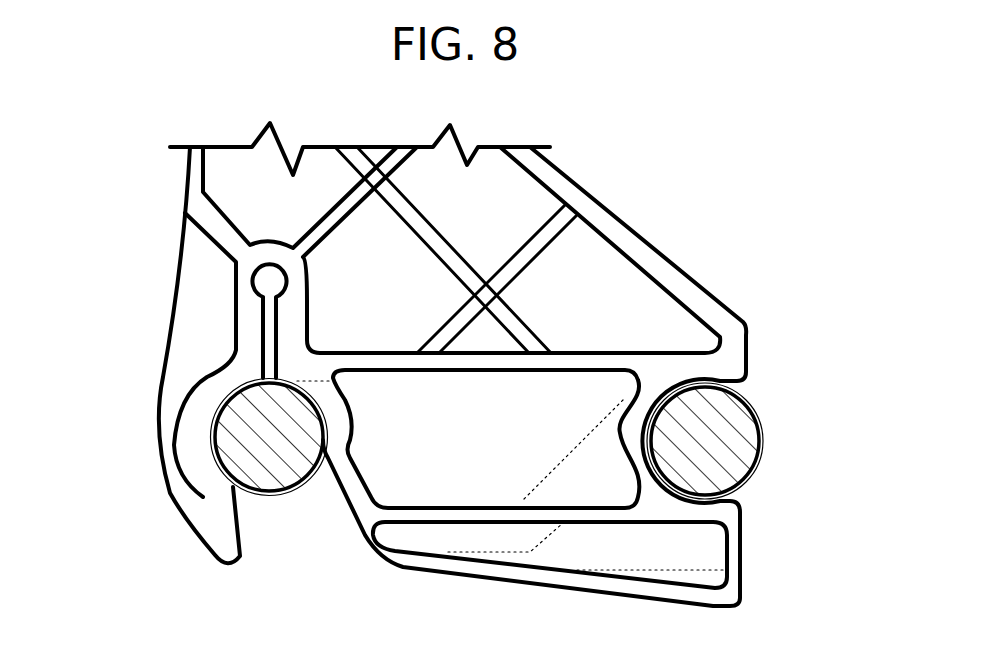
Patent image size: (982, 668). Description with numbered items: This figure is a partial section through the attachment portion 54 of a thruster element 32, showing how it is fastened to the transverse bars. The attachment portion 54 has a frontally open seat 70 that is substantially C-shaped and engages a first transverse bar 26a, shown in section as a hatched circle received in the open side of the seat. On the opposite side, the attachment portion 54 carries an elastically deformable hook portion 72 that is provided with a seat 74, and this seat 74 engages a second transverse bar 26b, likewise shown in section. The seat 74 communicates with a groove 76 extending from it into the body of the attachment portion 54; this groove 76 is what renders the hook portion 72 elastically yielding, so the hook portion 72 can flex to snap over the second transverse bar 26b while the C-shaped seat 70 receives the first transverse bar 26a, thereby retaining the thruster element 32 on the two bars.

The thruster element 32 is at (640, 213).
The attachment portion 54 is at (640, 332).
The groove 76 is at (266, 352).
The hook portion 72 is at (193, 438).
The second transverse bar 26b is at (292, 470).
The seat 74 is at (268, 495).
The first transverse bar 26a is at (766, 414).
The frontally open seat 70 is at (670, 473).